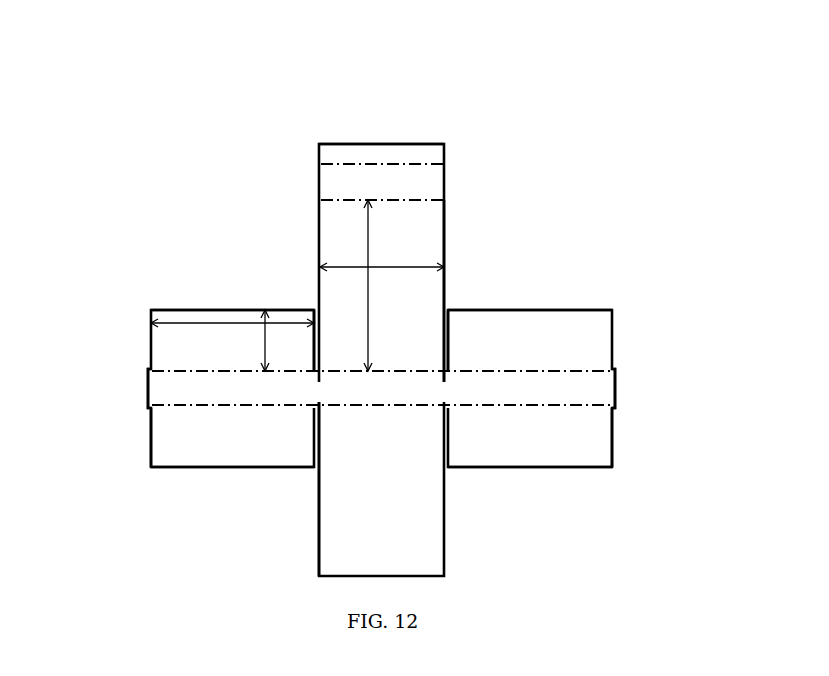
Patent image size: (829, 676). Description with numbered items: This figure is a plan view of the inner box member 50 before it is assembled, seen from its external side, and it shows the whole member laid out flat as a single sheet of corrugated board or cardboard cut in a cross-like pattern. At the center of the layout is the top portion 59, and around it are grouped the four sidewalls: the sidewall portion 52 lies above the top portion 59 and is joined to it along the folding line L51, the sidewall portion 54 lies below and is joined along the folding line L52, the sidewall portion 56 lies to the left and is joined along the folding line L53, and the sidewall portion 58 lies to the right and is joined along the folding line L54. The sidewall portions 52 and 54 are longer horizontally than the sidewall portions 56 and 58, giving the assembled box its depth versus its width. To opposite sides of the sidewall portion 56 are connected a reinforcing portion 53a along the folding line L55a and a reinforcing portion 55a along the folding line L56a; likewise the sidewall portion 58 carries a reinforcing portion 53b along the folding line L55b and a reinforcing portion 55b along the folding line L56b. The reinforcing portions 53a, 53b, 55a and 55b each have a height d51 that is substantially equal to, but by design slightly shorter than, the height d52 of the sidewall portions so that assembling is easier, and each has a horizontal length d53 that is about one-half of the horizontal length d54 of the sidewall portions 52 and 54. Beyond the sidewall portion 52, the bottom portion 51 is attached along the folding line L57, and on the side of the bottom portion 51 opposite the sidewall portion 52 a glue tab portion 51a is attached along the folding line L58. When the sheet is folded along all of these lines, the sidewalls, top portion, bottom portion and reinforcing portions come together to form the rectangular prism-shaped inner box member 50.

The inner box member 50 is at (456, 74).
The bottom portion 51 is at (430, 182).
The glue tab portion 51a is at (430, 152).
The sidewall portion (first sidewall portion) 52 is at (430, 236).
The reinforcing portion (first reinforcing portion) 53a is at (160, 345).
The reinforcing portion (first reinforcing portion) 53b is at (602, 345).
The sidewall portion (second sidewall portion) 54 is at (395, 517).
The reinforcing portion (second reinforcing portion) 55a is at (160, 437).
The reinforcing portion (second reinforcing portion) 55b is at (602, 437).
The sidewall portion (third sidewall portion) 56 is at (160, 388).
The sidewall portion (fourth sidewall portion) 58 is at (618, 388).
The top portion 59 is at (312, 315).
The folding line L51 is at (450, 330).
The folding line L52 is at (320, 445).
The folding line L53 is at (317, 397).
The folding line L54 is at (445, 390).
The folding line L55a is at (197, 367).
The folding line L55b is at (577, 372).
The folding line L56a is at (180, 412).
The folding line L56b is at (577, 408).
The folding line L57 is at (350, 199).
The folding line L58 is at (405, 164).
The height of reinforcing portions d51 is at (232, 331).
The height of sidewall portions d52 is at (383, 285).
The horizontal length of reinforcing portions d53 is at (280, 340).
The horizontal length of sidewall portions d54 is at (382, 259).